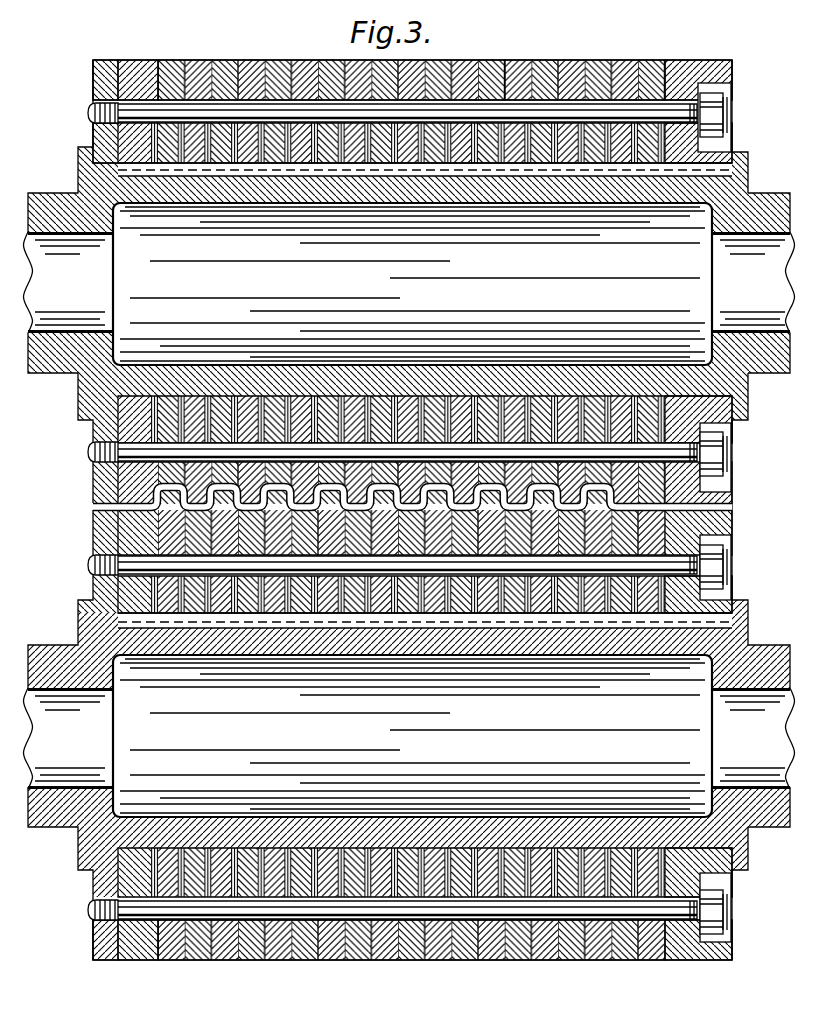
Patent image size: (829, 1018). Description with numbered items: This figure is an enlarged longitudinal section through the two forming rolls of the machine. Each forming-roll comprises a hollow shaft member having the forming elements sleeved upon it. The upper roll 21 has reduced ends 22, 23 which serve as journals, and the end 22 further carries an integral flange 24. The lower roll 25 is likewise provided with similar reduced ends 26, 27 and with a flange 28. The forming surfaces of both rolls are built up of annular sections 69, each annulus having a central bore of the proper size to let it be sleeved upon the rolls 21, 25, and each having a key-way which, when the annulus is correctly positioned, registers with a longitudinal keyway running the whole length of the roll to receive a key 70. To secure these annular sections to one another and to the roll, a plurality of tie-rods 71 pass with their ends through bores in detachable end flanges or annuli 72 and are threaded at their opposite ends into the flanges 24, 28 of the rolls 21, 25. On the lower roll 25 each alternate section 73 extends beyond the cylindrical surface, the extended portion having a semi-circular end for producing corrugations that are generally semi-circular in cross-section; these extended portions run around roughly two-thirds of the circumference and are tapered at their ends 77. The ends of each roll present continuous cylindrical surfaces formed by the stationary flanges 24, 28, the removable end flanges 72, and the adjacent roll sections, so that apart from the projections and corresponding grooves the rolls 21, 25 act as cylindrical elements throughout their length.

The upper roll 21 is at (613, 62).
The reduced end 22 is at (78, 189).
The reduced end 23 is at (752, 194).
The integral flange 24 is at (93, 70).
The lower roll 25 is at (452, 959).
The reduced end 26 is at (66, 829).
The reduced end 27 is at (752, 829).
The flange 28 is at (98, 940).
The annular sections 69 is at (476, 62).
The key 70 is at (580, 177).
The tie-rods 71 is at (657, 108).
The detachable end flanges 72 is at (734, 520).
The alternate sections of lower roll 73 is at (358, 626).
The tapered ends 77 is at (731, 72).